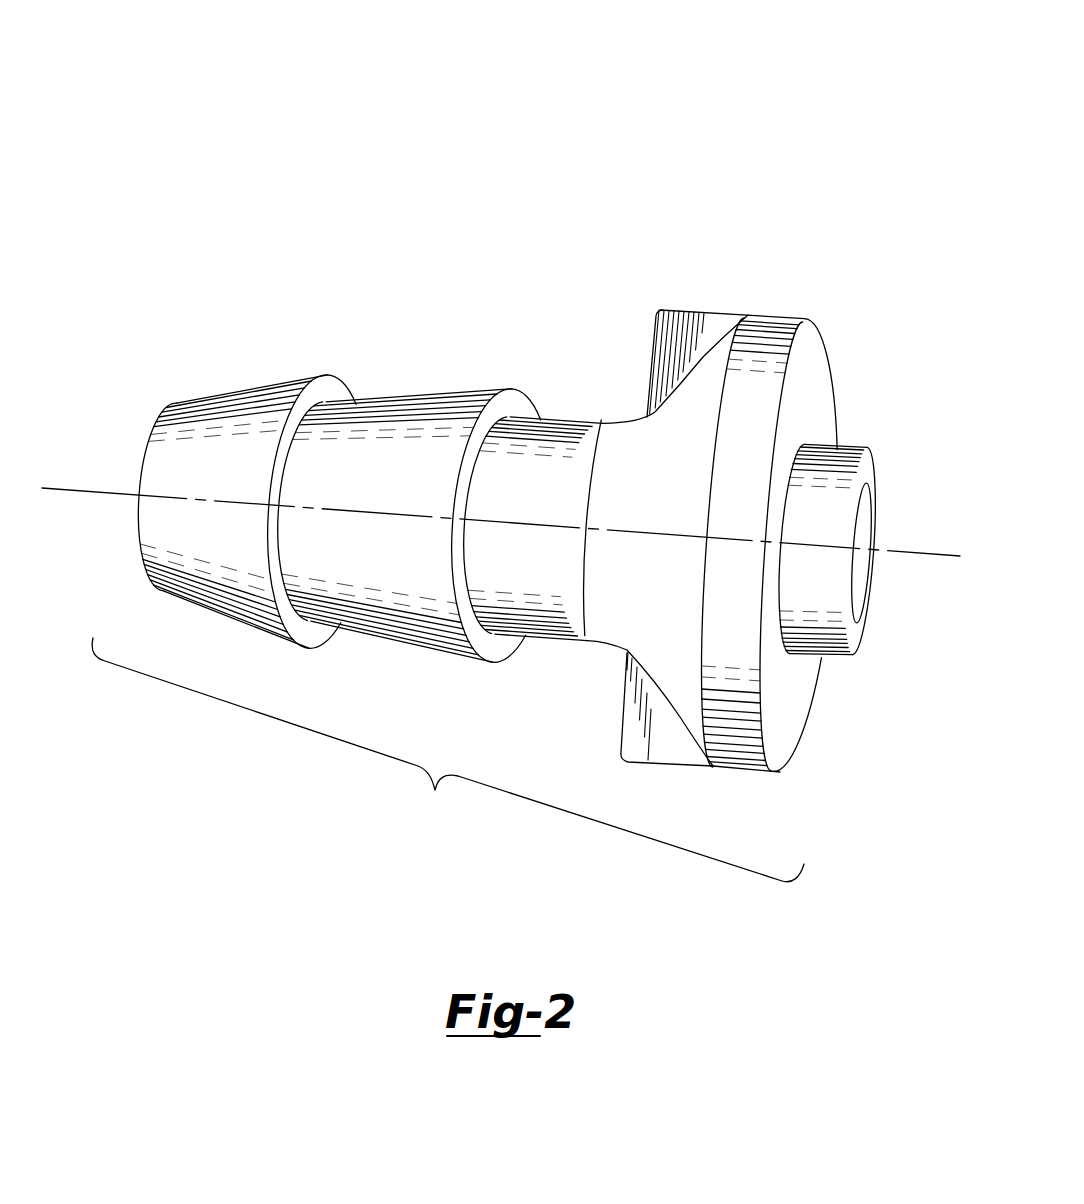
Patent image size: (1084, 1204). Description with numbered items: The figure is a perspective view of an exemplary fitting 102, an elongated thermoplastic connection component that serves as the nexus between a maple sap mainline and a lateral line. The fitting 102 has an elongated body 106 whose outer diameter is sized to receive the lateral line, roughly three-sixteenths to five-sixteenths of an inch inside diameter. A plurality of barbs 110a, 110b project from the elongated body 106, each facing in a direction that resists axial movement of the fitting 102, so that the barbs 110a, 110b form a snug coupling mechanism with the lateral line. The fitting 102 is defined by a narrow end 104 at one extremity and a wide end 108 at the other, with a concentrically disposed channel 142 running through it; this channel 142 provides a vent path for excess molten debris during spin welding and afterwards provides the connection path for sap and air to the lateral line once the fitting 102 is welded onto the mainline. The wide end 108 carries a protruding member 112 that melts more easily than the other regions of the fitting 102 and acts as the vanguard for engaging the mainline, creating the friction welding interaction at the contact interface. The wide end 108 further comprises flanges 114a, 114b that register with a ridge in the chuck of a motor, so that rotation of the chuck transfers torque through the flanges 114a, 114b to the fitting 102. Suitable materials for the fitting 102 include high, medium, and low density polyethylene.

The fitting 102 is at (501, 456).
The narrow end 104 is at (176, 404).
The concentrically disposed channel 142 is at (174, 483).
The barb 110a is at (326, 385).
The barb 110b is at (428, 414).
The elongated body 106 is at (448, 635).
The wide end 108 is at (766, 527).
The flange 114a is at (688, 313).
The flange 114b is at (647, 762).
The protruding member 112 is at (871, 472).